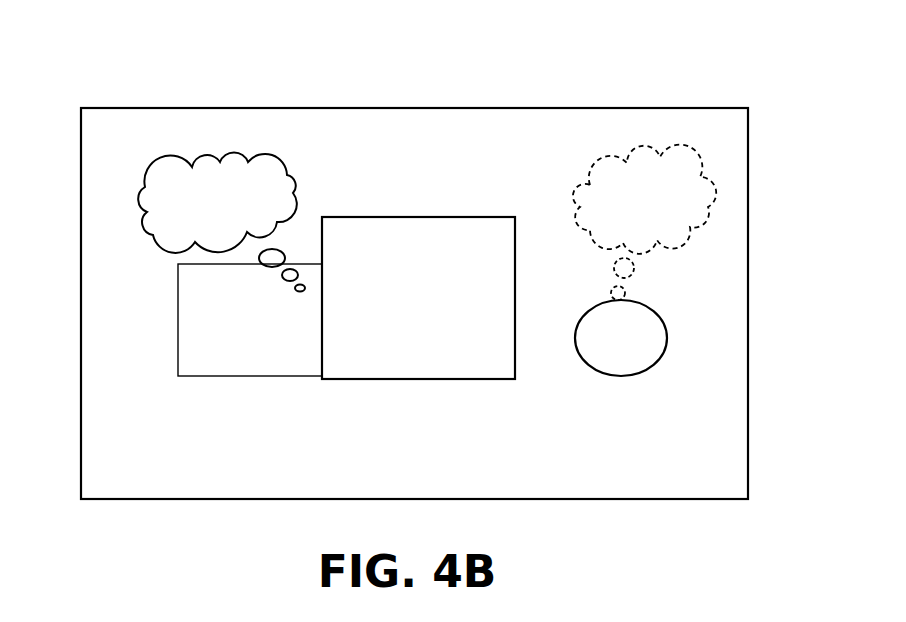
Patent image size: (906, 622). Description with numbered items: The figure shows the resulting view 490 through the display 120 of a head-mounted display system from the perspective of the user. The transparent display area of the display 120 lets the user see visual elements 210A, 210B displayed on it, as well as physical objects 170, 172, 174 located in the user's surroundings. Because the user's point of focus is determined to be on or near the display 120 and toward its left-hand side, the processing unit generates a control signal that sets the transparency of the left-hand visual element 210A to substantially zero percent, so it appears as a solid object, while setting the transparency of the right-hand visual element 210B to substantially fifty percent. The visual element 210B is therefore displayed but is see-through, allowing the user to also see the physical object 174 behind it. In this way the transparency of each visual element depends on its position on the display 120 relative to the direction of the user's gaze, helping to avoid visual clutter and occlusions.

The display 120 is at (190, 108).
The resulting view 490 is at (98, 303).
The physical object 170 is at (241, 360).
The physical object 172 is at (405, 225).
The physical object 174 is at (609, 359).
The visual element 210A is at (289, 162).
The visual element 210B is at (662, 152).